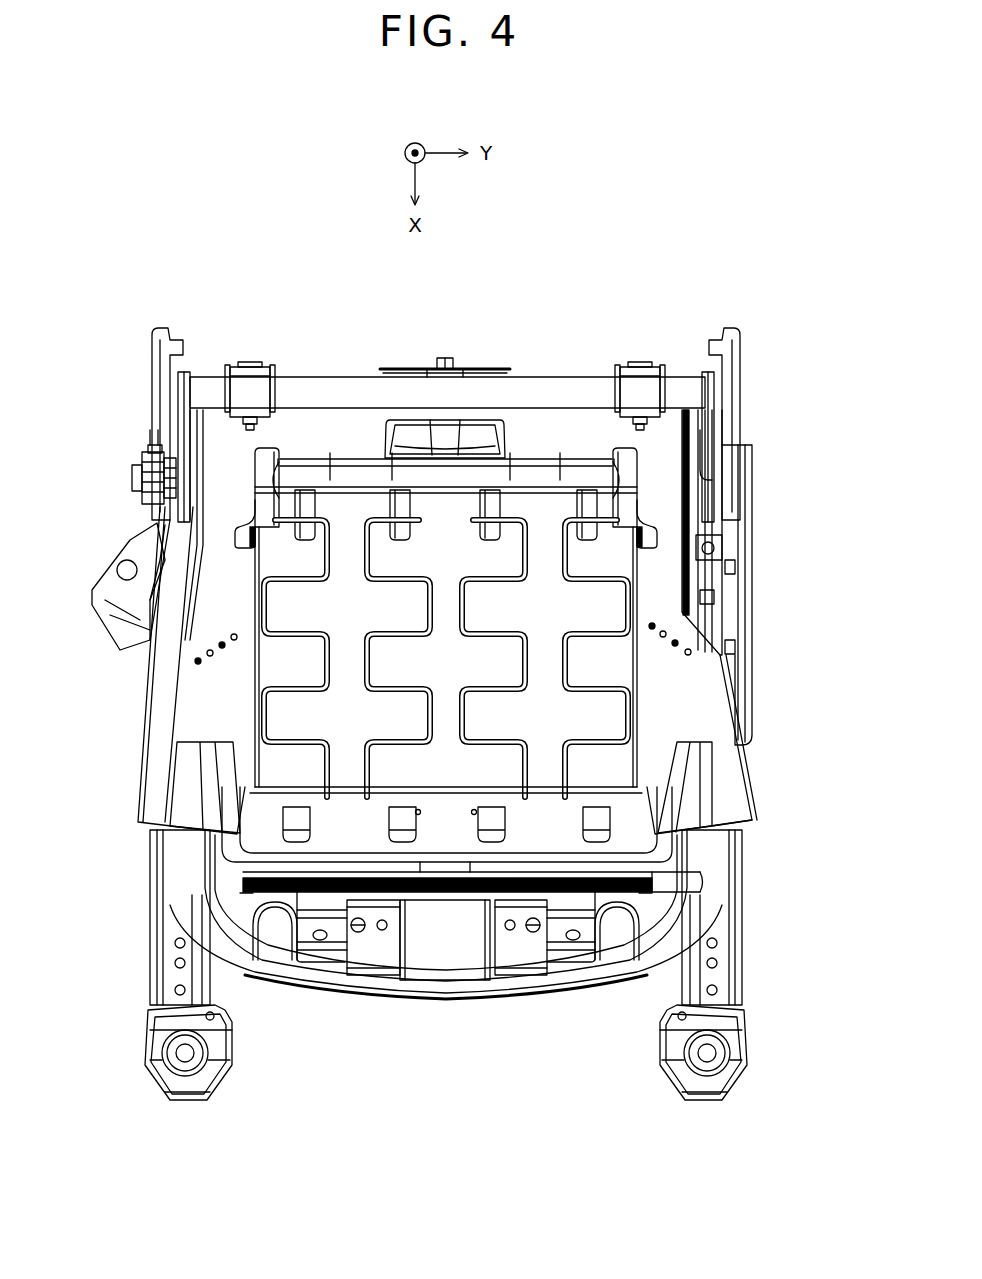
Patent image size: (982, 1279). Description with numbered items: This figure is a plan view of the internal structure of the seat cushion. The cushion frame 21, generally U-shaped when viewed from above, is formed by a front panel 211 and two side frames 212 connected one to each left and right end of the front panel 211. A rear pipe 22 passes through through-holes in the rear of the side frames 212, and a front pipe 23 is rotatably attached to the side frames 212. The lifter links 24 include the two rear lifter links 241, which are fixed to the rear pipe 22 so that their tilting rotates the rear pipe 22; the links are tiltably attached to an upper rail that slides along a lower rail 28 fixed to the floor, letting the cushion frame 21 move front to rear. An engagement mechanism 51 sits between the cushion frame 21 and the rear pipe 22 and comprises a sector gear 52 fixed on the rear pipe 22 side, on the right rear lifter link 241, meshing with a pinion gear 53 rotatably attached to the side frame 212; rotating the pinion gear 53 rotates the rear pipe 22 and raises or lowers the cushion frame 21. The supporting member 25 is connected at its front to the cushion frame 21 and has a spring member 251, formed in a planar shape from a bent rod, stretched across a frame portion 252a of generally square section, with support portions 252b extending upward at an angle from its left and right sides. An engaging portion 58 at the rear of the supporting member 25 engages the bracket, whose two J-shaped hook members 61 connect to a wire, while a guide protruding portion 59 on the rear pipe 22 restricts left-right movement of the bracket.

The cushion frame 21 is at (446, 954).
The front panel 211 is at (318, 982).
The side frame 212 is at (162, 352).
The rear pipe 22 is at (355, 385).
The front pipe 23 is at (690, 848).
The lifter links 24 is at (443, 504).
The rear lifter link 241 is at (188, 368).
The supporting member 25 is at (443, 741).
The spring member 251 is at (297, 580).
The frame portion 252a is at (530, 836).
The support portion 252b is at (185, 700).
The lower rail 28 is at (150, 945).
The engagement mechanism 51 is at (126, 473).
The sector gear 52 is at (148, 452).
The pinion gear 53 is at (165, 486).
The engaging portion 58 is at (479, 362).
The guide protruding portion 59 is at (228, 366).
The hook member 61 is at (258, 393).